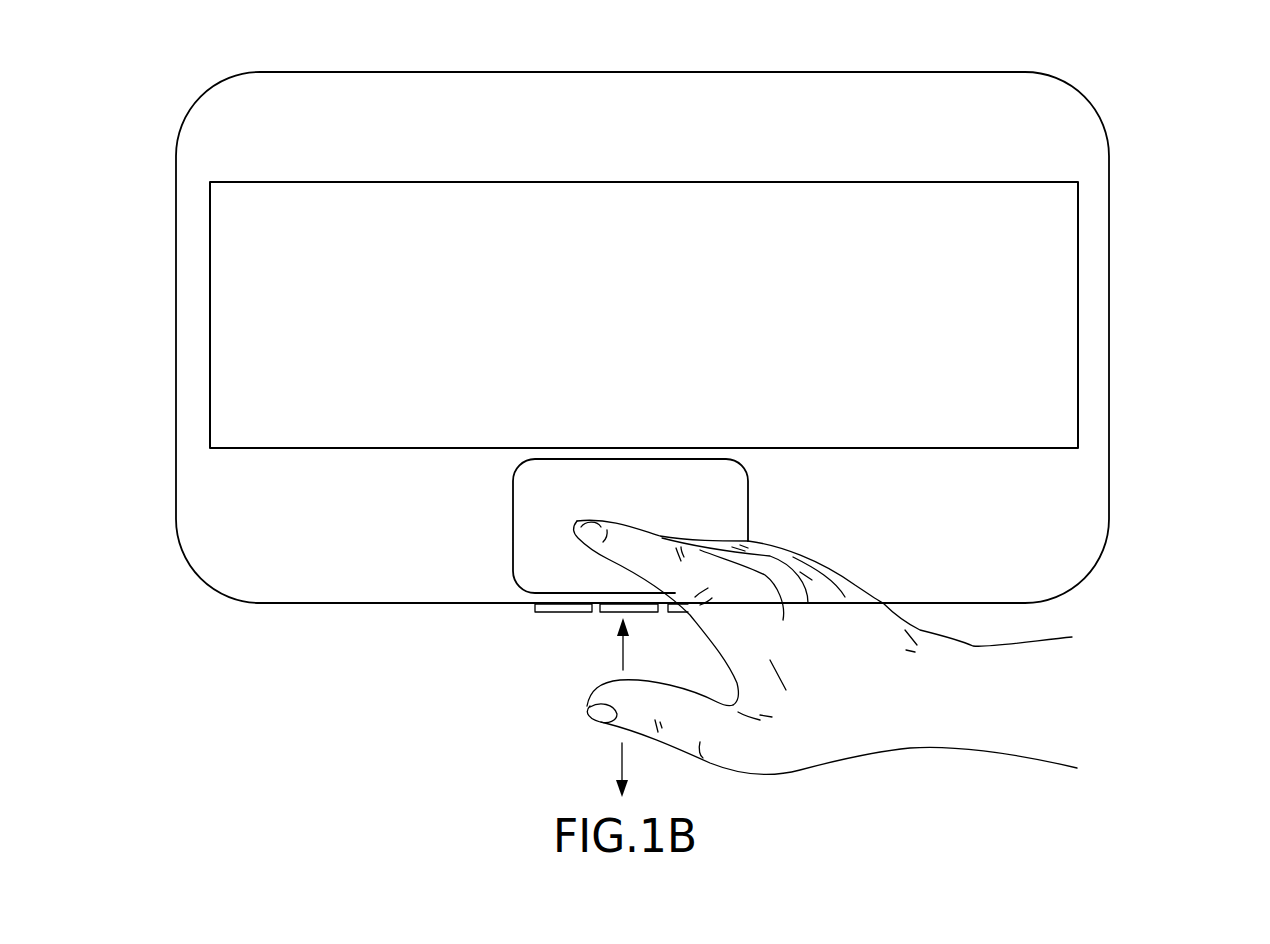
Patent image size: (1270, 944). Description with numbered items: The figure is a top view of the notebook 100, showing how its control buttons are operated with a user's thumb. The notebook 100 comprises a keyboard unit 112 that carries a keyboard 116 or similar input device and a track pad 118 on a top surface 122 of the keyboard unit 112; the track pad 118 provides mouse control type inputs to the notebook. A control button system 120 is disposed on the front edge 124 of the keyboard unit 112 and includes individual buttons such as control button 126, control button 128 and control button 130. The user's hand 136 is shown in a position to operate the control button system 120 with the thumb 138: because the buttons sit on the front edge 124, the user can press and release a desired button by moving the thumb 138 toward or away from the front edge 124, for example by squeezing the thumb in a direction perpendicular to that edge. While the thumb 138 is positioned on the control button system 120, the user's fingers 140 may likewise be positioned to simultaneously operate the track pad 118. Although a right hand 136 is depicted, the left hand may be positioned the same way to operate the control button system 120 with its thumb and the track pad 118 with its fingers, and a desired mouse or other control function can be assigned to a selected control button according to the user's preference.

The notebook 100 is at (1166, 116).
The keyboard unit 112 is at (1109, 472).
The keyboard 116 is at (1078, 250).
The track pad 118 is at (513, 550).
The control button system 120 is at (557, 700).
The top surface 122 is at (1028, 545).
The front edge 124 is at (330, 604).
The control button 126 is at (540, 613).
The control button 128 is at (607, 613).
The control button 130 is at (678, 613).
The hand 136 is at (857, 758).
The thumb 138 is at (588, 706).
The fingers 140 is at (605, 510).